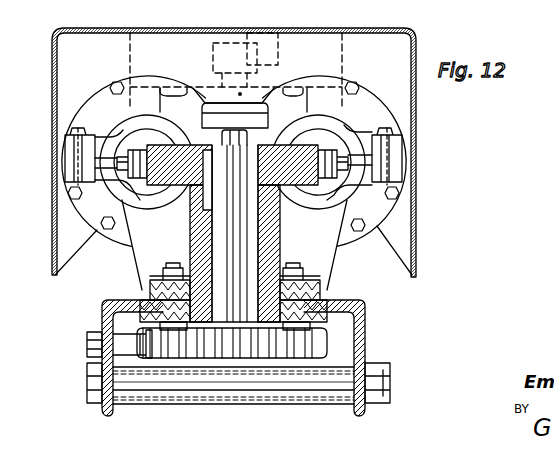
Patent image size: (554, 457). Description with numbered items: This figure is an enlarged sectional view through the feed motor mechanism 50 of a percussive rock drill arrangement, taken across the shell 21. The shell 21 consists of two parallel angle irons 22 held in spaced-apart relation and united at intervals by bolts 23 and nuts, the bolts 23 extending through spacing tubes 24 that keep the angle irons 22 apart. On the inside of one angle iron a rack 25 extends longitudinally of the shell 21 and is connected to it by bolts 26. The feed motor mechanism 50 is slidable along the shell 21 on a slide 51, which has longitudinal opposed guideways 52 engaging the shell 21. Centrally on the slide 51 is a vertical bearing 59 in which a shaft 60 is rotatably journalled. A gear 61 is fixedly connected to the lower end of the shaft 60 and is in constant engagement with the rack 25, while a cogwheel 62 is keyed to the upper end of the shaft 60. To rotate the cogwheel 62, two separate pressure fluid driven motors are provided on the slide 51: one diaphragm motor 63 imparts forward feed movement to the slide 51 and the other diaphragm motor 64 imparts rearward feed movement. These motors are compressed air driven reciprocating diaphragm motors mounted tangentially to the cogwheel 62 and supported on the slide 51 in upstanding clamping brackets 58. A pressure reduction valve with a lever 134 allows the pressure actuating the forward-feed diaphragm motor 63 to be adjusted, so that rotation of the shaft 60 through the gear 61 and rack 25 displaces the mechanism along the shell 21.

The shell 21 is at (365, 307).
The angle irons 22 is at (117, 302).
The bolts 23 is at (242, 380).
The spacing tubes 24 is at (188, 382).
The rack 25 is at (123, 338).
The bolts 26 is at (97, 349).
The feed motor mechanism 50 is at (413, 107).
The slide 51 is at (317, 282).
The guideways 52 is at (163, 302).
The clamping brackets 58 is at (147, 212).
The vertical bearing 59 is at (200, 243).
The shaft 60 is at (247, 247).
The gear 61 is at (298, 347).
The cogwheel 62 is at (170, 160).
The diaphragm motor 63 is at (125, 140).
The diaphragm motor 64 is at (337, 140).
The lever 134 is at (227, 55).